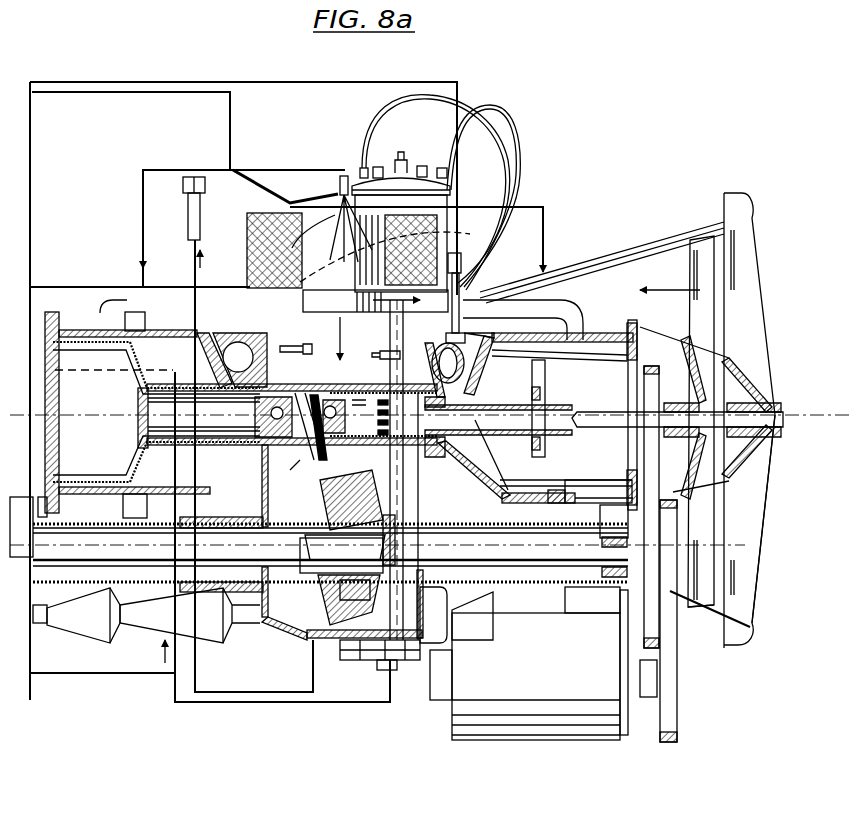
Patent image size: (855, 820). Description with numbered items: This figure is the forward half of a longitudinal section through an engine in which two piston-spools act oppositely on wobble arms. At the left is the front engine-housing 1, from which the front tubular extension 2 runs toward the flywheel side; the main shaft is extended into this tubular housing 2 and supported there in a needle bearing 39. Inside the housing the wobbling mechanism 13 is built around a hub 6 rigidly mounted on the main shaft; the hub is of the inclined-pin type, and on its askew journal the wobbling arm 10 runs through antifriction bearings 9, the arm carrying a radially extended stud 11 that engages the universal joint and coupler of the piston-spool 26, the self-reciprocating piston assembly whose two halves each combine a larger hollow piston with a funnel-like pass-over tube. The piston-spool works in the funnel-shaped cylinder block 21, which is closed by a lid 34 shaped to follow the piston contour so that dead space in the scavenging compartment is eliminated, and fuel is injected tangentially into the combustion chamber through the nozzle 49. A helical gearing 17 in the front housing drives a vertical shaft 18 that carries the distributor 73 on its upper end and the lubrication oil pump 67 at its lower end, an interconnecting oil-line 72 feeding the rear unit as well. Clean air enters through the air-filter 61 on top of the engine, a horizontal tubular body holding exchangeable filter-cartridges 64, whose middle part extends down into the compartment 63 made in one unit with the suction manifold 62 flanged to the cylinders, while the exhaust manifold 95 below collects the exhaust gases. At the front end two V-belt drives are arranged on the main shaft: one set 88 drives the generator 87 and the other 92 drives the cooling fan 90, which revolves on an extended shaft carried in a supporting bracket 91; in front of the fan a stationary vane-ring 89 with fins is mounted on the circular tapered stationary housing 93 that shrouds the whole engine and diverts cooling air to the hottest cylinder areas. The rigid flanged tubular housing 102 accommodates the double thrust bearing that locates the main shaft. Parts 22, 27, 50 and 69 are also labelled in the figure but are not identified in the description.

The front engine-housing 1 is at (277, 643).
The front tubular extension 2 is at (478, 536).
The hub 6 is at (330, 585).
The antifriction bearings 9 is at (345, 600).
The wobbling arm 10 is at (394, 472).
The radially extended stud 11 is at (299, 464).
The wobbling mechanism 13 is at (313, 491).
The helical gearing 17 is at (366, 545).
The vertical shaft 18 is at (437, 352).
The cylinder block 21 is at (617, 340).
The diffuser casing 22 is at (474, 394).
The piston-spool 26 is at (290, 396).
The bearing housing 27 is at (208, 354).
The lid 34 is at (548, 378).
The needle bearing 39 is at (625, 535).
The nozzle 49 is at (465, 292).
The nozzle 50 is at (372, 366).
The air-filter 61 is at (265, 212).
The suction manifold 62 is at (556, 306).
The compartment 63 is at (312, 352).
The filter-cartridges 64 is at (294, 250).
The lubrication oil pump 67 is at (358, 665).
The valve 69 is at (183, 237).
The interconnecting oil-line 72 is at (150, 675).
The distributor 73 is at (415, 168).
The generator 87 is at (596, 741).
The V-belt drive set 88 is at (667, 717).
The stationary vane-ring 89 is at (748, 545).
The cooling fan 90 is at (697, 545).
The supporting bracket 91 is at (592, 408).
The V-belt drive 92 is at (650, 449).
The circular tapered stationary housing 93 is at (600, 257).
The exhaust manifold 95 is at (560, 518).
The flanged tubular housing 102 is at (70, 592).